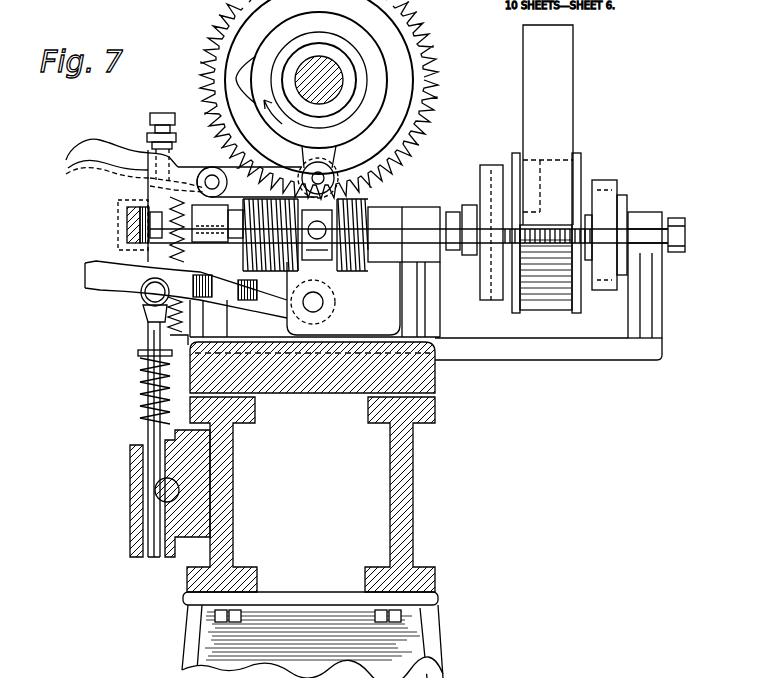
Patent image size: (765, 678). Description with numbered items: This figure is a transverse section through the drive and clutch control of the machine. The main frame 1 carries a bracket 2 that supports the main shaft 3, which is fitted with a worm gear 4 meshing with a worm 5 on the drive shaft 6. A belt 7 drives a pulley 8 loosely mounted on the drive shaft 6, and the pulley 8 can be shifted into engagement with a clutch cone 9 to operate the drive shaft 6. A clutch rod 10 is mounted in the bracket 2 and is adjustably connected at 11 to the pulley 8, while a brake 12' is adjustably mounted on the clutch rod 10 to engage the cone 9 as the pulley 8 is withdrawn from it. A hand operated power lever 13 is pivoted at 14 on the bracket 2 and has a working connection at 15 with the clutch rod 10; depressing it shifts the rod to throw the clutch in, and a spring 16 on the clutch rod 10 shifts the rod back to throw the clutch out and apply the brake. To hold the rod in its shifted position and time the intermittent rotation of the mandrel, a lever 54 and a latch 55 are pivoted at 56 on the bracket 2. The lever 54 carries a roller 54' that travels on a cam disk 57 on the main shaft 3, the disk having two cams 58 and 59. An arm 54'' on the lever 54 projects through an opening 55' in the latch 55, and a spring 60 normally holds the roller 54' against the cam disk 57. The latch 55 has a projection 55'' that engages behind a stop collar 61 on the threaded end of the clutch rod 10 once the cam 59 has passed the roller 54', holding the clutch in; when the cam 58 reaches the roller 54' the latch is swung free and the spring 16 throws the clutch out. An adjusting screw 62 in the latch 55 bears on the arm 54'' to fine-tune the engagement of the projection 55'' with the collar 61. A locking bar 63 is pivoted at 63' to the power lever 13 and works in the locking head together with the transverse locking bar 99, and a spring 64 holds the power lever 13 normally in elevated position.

The main frame 1 is at (386, 548).
The bracket 2 is at (311, 393).
The main shaft 3 is at (345, 79).
The worm gear 4 is at (428, 50).
The worm 5 is at (364, 266).
The drive shaft 6 is at (380, 216).
The belt 7 is at (568, 80).
The pulley 8 is at (582, 158).
The clutch cone 9 is at (540, 192).
The clutch rod 10 is at (392, 228).
The adjustable connection 11 is at (607, 222).
The disc 12' is at (484, 214).
The power lever 13 is at (100, 283).
The pivot 14 is at (323, 304).
The working connection 15 is at (330, 264).
The spring 16 is at (217, 223).
The lever 54 is at (248, 182).
The roller 54' is at (333, 173).
The arm 54'' is at (155, 185).
The latch 55 is at (135, 147).
The opening 55' is at (128, 206).
The projection 55'' is at (119, 225).
The pivot 56 is at (211, 180).
The cam disk 57 is at (380, 104).
The cam 58 is at (249, 80).
The cam 59 is at (320, 152).
The spring 60 is at (170, 257).
The stop collar 61 is at (130, 226).
The adjusting screw 62 is at (163, 113).
The locking bar 63 is at (138, 455).
The pivot 63' is at (137, 316).
The spring 64 is at (140, 383).
The locking bar 99 is at (155, 490).